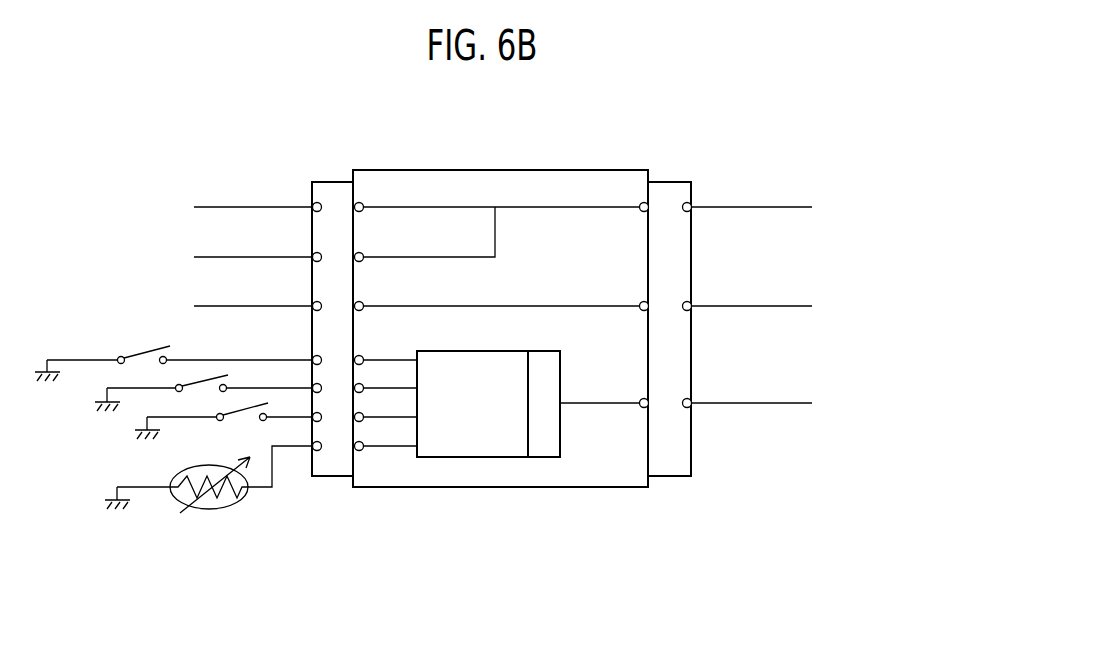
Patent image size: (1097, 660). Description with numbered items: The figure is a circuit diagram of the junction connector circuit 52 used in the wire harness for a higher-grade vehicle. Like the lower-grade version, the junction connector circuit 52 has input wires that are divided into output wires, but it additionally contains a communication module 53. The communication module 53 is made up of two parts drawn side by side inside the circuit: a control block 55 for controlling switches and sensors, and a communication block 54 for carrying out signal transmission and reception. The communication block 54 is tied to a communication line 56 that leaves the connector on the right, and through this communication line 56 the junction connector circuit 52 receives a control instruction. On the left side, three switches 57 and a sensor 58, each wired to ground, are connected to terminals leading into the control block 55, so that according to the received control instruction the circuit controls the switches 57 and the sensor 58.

The junction connector circuit 52 is at (525, 168).
The communication module 53 is at (438, 560).
The communication block 54 is at (540, 458).
The control block 55 is at (455, 458).
The communication line 56 is at (760, 405).
The switches 57 is at (140, 342).
The sensor 58 is at (208, 510).